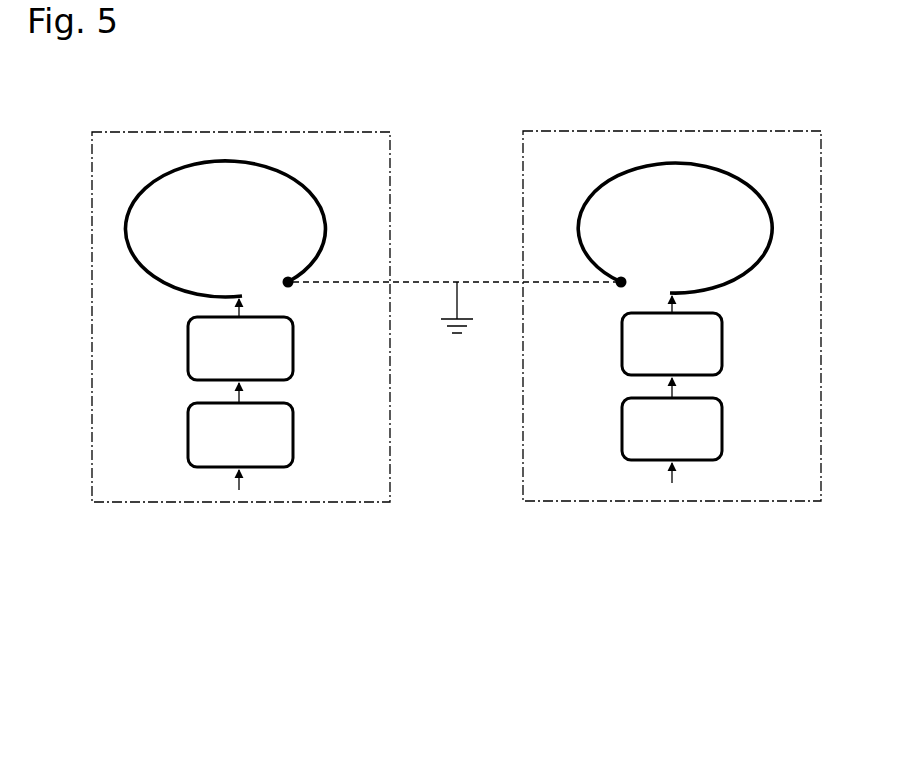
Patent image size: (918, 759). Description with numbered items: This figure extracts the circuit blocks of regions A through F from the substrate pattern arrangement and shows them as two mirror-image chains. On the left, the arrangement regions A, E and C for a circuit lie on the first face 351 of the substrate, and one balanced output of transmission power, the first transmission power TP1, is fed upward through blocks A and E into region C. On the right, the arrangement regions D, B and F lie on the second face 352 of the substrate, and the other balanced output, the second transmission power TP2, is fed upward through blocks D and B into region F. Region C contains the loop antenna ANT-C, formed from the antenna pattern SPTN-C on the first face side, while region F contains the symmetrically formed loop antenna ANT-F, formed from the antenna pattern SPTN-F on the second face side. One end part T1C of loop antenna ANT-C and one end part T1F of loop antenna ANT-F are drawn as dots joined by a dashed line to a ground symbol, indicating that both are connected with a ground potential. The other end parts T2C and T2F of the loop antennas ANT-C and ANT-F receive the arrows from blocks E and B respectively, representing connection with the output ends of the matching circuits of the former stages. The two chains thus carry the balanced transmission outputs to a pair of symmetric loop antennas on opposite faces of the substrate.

The first face 351 is at (156, 502).
The second face 352 is at (588, 501).
The loop antenna ANT-C is at (234, 158).
The loop antenna ANT-F is at (672, 160).
The antenna pattern SPTN-C is at (141, 147).
The antenna pattern SPTN-F is at (770, 147).
The one end part T1C is at (296, 286).
The other end part T2C is at (220, 296).
The one end part T1F is at (614, 286).
The other end part T2F is at (682, 294).
The first transmission power TP1 is at (240, 418).
The second transmission power TP2 is at (672, 416).